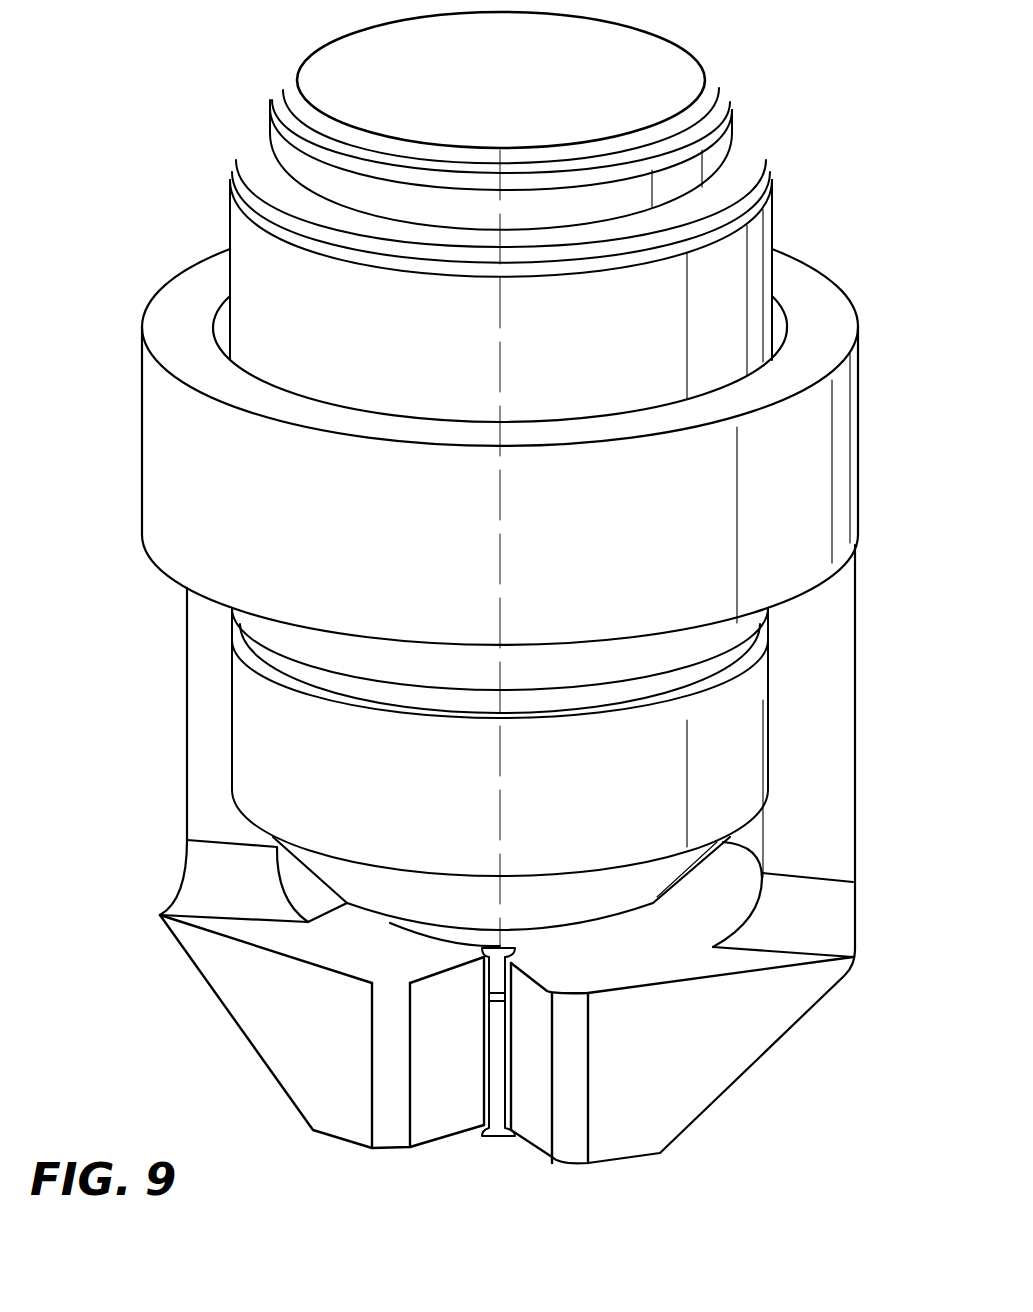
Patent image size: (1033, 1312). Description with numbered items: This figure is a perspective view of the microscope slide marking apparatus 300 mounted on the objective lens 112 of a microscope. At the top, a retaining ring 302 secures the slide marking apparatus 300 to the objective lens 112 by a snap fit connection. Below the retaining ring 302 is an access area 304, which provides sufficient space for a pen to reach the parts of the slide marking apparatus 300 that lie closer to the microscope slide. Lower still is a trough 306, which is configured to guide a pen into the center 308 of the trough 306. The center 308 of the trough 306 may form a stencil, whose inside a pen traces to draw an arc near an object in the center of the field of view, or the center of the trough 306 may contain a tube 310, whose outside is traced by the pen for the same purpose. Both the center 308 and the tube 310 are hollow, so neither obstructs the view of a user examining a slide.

The microscope slide marking apparatus 300 is at (162, 224).
The objective lens 112 is at (228, 217).
The retaining ring 302 is at (213, 495).
The access area 304 is at (725, 898).
The trough 306 is at (433, 1050).
The center of the trough 308 is at (520, 963).
The tube 310 is at (483, 1133).